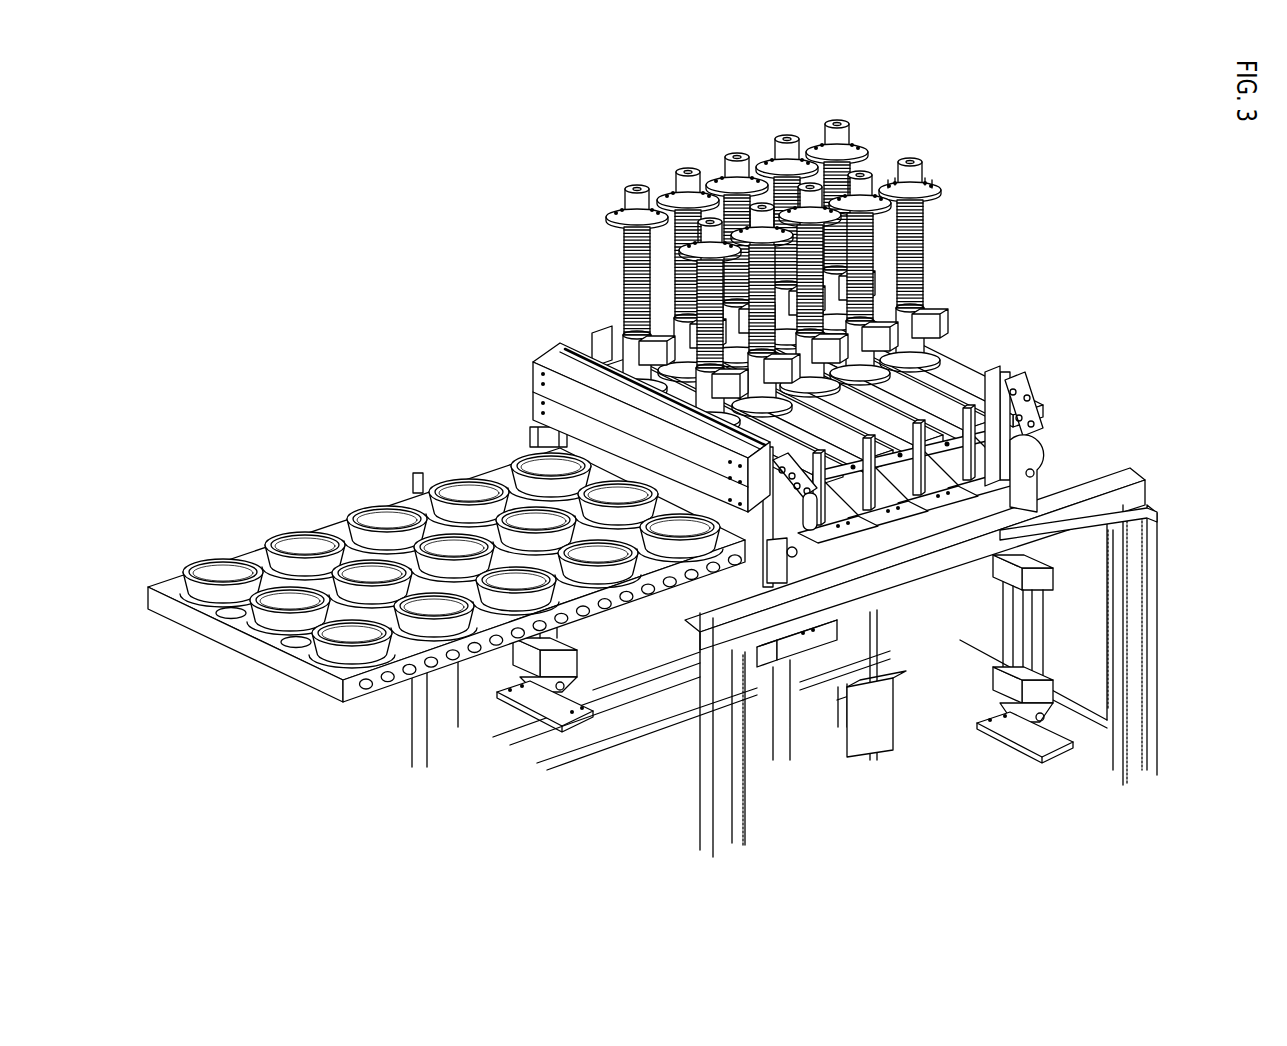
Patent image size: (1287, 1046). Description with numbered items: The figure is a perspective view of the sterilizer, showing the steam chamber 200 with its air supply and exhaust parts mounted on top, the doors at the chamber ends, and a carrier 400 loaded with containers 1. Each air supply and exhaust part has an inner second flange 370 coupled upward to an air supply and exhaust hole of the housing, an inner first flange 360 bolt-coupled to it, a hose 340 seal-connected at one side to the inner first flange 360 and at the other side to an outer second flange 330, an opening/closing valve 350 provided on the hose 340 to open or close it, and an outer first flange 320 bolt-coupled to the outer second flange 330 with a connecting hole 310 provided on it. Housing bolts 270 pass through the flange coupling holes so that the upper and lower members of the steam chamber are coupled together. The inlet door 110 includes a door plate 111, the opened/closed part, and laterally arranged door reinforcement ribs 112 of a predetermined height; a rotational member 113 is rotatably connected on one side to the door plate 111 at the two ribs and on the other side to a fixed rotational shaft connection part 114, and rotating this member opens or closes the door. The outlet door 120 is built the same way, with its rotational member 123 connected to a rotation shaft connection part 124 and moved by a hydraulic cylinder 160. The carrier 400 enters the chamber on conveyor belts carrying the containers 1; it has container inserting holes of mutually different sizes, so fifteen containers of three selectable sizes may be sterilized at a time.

The container 1 is at (313, 527).
The inlet door 110 is at (548, 333).
The door plate 111 is at (577, 343).
The door reinforcement rib 112 is at (533, 402).
The rotational member 113 is at (800, 550).
The rotational shaft connection part 114 is at (795, 600).
The outlet door 120 is at (1043, 398).
The rotational member 123 is at (1043, 435).
The rotation shaft connection part 124 is at (1123, 527).
The hydraulic cylinder 160 is at (1028, 617).
The steam chamber 200 is at (913, 560).
The housing bolt 270 is at (987, 560).
The connecting hole 310 is at (922, 126).
The outer first flange 320 is at (960, 167).
The outer second flange 330 is at (954, 201).
The hose 340 is at (983, 254).
The opening/closing valve 350 is at (998, 309).
The inner first flange 360 is at (984, 338).
The inner second flange 370 is at (1003, 380).
The carrier 400 is at (258, 553).